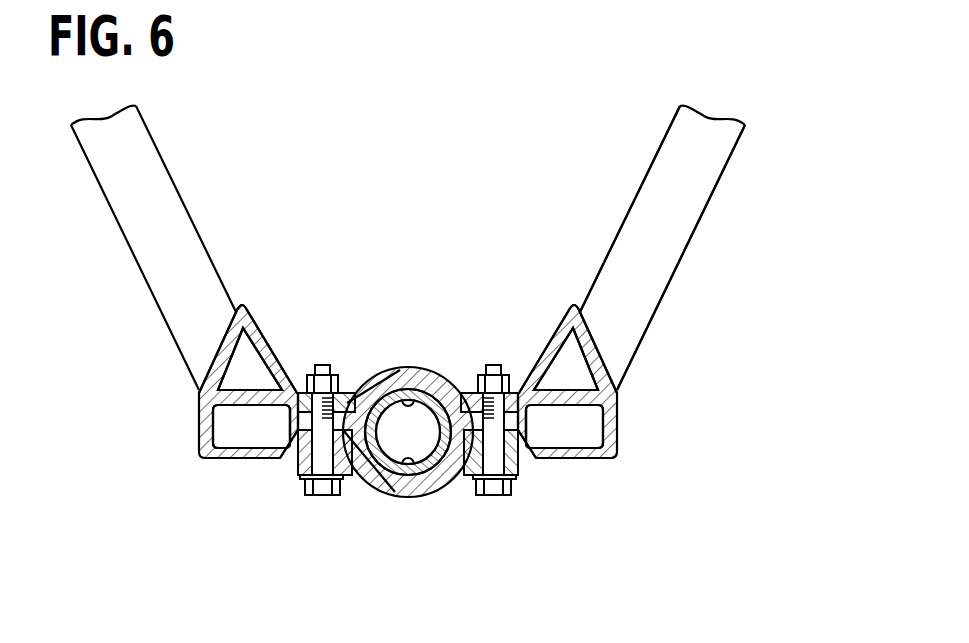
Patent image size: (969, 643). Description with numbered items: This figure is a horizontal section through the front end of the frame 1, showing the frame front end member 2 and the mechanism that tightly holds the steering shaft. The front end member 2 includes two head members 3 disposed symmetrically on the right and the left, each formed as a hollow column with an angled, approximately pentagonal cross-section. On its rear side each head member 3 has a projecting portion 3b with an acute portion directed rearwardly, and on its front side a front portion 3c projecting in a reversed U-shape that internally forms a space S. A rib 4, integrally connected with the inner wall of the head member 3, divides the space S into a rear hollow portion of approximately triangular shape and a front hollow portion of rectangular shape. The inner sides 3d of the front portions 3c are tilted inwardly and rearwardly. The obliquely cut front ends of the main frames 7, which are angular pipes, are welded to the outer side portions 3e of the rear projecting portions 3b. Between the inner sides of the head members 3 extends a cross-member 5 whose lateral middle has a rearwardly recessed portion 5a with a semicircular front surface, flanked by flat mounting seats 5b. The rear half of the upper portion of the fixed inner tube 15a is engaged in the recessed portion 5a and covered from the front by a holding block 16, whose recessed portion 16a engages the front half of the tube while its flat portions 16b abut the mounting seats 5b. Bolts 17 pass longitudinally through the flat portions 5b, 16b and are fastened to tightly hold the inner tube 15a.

The frame 1 is at (723, 262).
The frame front end member 2 is at (190, 468).
The head member 3 is at (197, 425).
The projecting portion 3b is at (258, 326).
The front portion 3c is at (262, 450).
The inner side 3d is at (270, 458).
The outer side portion 3e is at (222, 342).
The rib 4 is at (240, 396).
The cross-member 5 is at (398, 364).
The recessed portion 5a is at (422, 385).
The mounting seat 5b is at (345, 395).
The main frame 7 is at (148, 163).
The inner tube 15a is at (473, 397).
The holding block 16 is at (323, 462).
The recessed portion 16a is at (380, 494).
The flat portion 16b is at (303, 465).
The bolt 17 is at (308, 482).
The space S is at (233, 432).